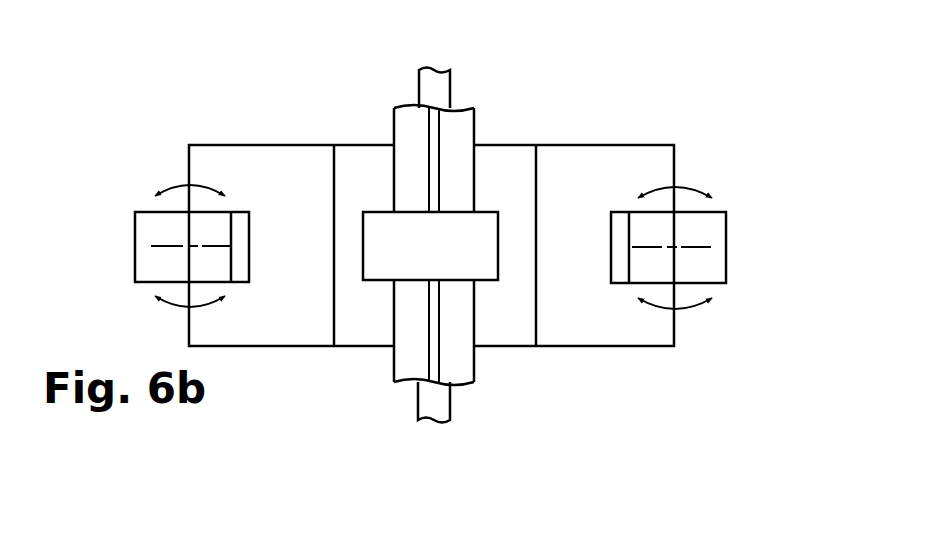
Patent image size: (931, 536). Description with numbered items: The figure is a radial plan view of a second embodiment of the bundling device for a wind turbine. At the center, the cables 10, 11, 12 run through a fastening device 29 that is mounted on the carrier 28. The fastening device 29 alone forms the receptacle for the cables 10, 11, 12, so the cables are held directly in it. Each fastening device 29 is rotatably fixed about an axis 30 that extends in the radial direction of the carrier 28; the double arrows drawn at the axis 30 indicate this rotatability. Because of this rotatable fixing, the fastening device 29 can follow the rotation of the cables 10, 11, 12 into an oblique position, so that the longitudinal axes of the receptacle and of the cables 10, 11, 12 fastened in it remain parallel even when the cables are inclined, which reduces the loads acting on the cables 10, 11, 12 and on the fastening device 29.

The cable 10 is at (509, 215).
The cable 11 is at (434, 88).
The cable 12 is at (434, 402).
The carrier 28 is at (502, 325).
The fastening device 29 is at (383, 267).
The axis 30 is at (168, 245).